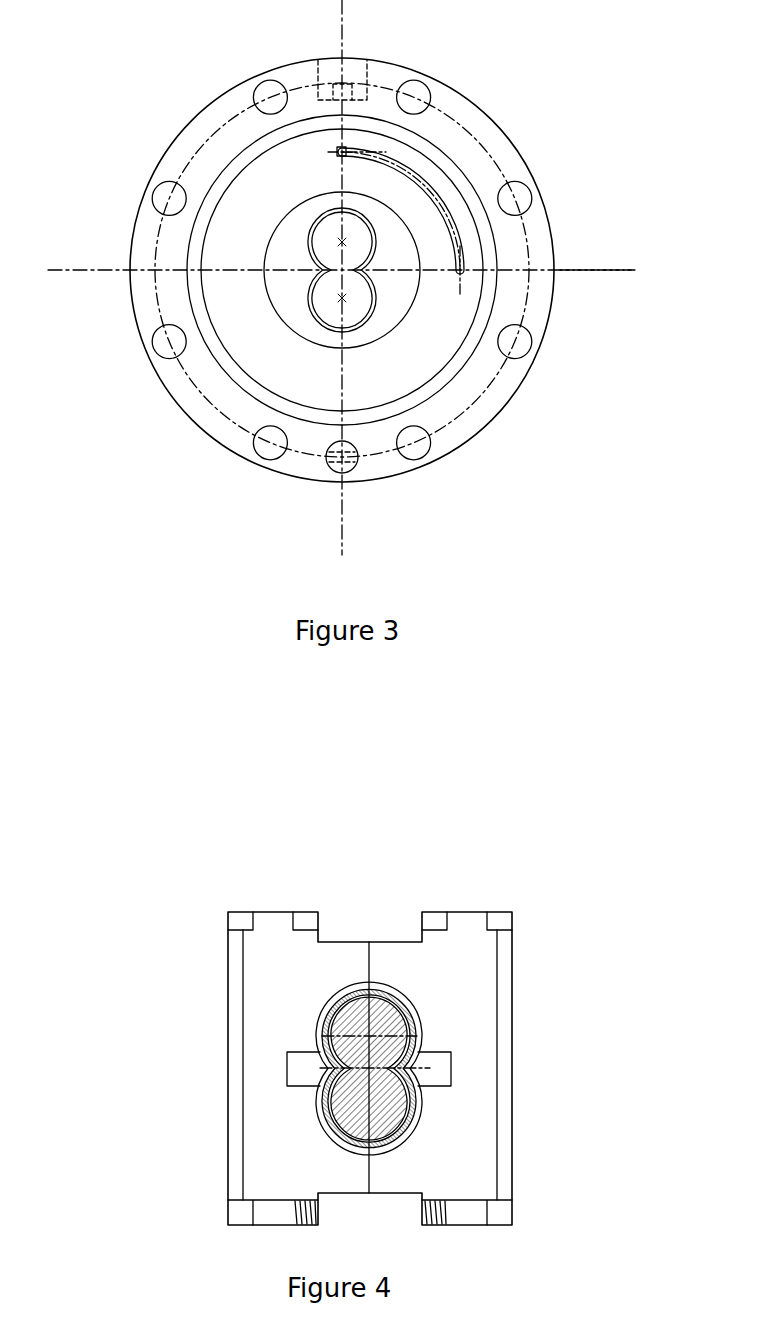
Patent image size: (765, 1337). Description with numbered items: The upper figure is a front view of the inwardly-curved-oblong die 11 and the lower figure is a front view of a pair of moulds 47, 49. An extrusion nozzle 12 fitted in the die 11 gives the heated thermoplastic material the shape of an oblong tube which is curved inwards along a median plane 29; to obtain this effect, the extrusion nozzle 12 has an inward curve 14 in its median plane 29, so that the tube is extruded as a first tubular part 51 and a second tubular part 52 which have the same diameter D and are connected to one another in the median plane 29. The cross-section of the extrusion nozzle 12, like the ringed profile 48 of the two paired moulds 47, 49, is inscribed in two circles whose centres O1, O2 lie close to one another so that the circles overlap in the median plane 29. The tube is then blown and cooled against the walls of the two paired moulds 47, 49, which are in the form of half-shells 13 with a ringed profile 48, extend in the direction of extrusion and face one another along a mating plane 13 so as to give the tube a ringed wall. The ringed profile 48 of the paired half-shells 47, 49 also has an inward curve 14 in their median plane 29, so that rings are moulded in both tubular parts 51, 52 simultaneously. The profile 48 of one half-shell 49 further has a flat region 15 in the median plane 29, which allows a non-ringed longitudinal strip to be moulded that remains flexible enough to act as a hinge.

In FIG. 3, the die 11 is at (397, 490).
In FIG. 3, the extrusion nozzle 12 is at (305, 308).
In FIG. 3, the inward curve 14 is at (340, 269).
In FIG. 3, the median plane 29 is at (600, 266).
In FIG. 4, the median plane 29 is at (437, 1052).
In FIG. 4, the half-shells 13 is at (377, 1172).
In FIG. 4, the flat region 15 is at (330, 1065).
In FIG. 4, the mould 47 is at (276, 934).
In FIG. 4, the ringed profile 48 is at (327, 1112).
In FIG. 4, the mould 49 is at (500, 956).
In FIG. 4, the first tubular part 51 is at (332, 1012).
In FIG. 4, the second tubular part 52 is at (327, 1135).
In FIG. 3, the centre O1 is at (339, 232).
In FIG. 4, the centre O1 is at (367, 1037).
In FIG. 3, the centre O2 is at (343, 306).
In FIG. 4, the centre O2 is at (370, 1104).
In FIG. 4, the diameter D is at (372, 1036).